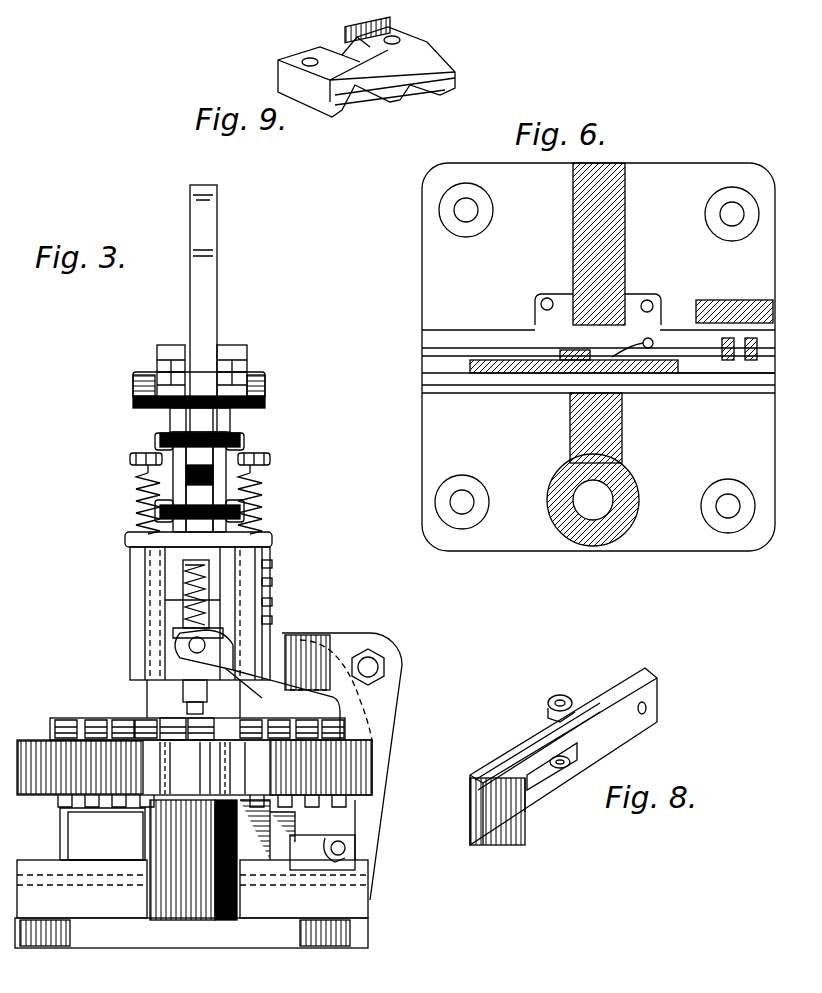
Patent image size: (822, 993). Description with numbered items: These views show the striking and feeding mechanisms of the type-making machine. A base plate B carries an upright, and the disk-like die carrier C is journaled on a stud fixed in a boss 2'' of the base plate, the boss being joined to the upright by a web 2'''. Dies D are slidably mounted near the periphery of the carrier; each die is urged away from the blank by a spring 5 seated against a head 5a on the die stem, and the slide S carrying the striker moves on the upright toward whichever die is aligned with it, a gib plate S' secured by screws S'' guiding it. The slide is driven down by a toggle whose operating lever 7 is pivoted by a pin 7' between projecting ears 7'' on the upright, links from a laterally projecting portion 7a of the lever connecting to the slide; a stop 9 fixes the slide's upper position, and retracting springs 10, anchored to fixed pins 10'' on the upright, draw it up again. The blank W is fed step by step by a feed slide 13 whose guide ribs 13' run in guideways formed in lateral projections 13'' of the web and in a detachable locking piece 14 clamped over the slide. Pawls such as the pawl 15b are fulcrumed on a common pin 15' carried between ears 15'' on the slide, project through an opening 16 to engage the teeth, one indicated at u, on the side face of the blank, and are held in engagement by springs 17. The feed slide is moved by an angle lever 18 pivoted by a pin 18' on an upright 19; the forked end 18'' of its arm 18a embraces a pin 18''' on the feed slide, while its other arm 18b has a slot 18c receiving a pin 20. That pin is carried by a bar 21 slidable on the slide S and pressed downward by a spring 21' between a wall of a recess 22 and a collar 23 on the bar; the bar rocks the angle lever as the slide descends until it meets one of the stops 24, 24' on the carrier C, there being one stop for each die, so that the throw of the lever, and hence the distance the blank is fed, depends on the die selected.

In FIG. 3, the operating lever 7 is at (214, 310).
In FIG. 3, the pin 7' is at (182, 387).
In FIG. 3, the projecting ears 7'' is at (199, 353).
In FIG. 3, the laterally projecting portion 7a is at (170, 420).
In FIG. 3, the fixed pin 10'' is at (183, 463).
In FIG. 3, the retracting spring 10 is at (195, 499).
In FIG. 3, the stop 9 is at (125, 540).
In FIG. 3, the slide S is at (186, 613).
In FIG. 3, the gib plate S' is at (279, 583).
In FIG. 3, the screws S'' is at (291, 560).
In FIG. 3, the spring 5 is at (60, 723).
In FIG. 3, the head 5a is at (66, 718).
In FIG. 3, the recess 22 is at (185, 575).
In FIG. 3, the spring 21' is at (160, 603).
In FIG. 3, the bar 21 is at (174, 699).
In FIG. 3, the collar 23 is at (173, 632).
In FIG. 3, the pin 20 is at (189, 645).
In FIG. 3, the arm of angle lever 18b is at (295, 635).
In FIG. 3, the angle lever 18 is at (330, 766).
In FIG. 3, the pin 18' is at (392, 661).
In FIG. 3, the slot 18c is at (245, 682).
In FIG. 3, the arm of angle lever 18a is at (385, 765).
In FIG. 3, the forked end 18'' is at (371, 842).
In FIG. 3, the pin 18''' is at (370, 855).
In FIG. 3, the stop 24 is at (207, 715).
In FIG. 3, the nut 24' is at (169, 717).
In FIG. 3, the die carrier C is at (194, 767).
In FIG. 3, the dies D is at (80, 810).
In FIG. 3, the blank W is at (105, 836).
In FIG. 6, the blank W is at (510, 373).
In FIG. 3, the lateral projections 13'' is at (82, 876).
In FIG. 6, the lateral projections 13'' is at (453, 400).
In FIG. 6, the guide ribs 13' is at (598, 354).
In FIG. 8, the guide ribs 13' is at (535, 774).
In FIG. 3, the feed slide 13 is at (322, 852).
In FIG. 6, the feed slide 13 is at (726, 379).
In FIG. 8, the feed slide 13 is at (563, 756).
In FIG. 3, the boss 2'' is at (168, 860).
In FIG. 6, the boss 2'' is at (607, 500).
In FIG. 6, the web 2''' is at (575, 313).
In FIG. 3, the upright 19 is at (372, 820).
In FIG. 6, the upright 19 is at (735, 300).
In FIG. 3, the base plate B is at (210, 940).
In FIG. 6, the base plate B is at (560, 218).
In FIG. 6, the groove u is at (505, 360).
In FIG. 6, the springs 17 is at (595, 348).
In FIG. 6, the opening 16 is at (590, 352).
In FIG. 8, the opening 16 is at (535, 780).
In FIG. 6, the pin 15' is at (647, 335).
In FIG. 6, the pawl 15b is at (722, 348).
In FIG. 8, the projecting ears 15'' is at (568, 692).
In FIG. 9, the detachable piece 14 is at (433, 45).